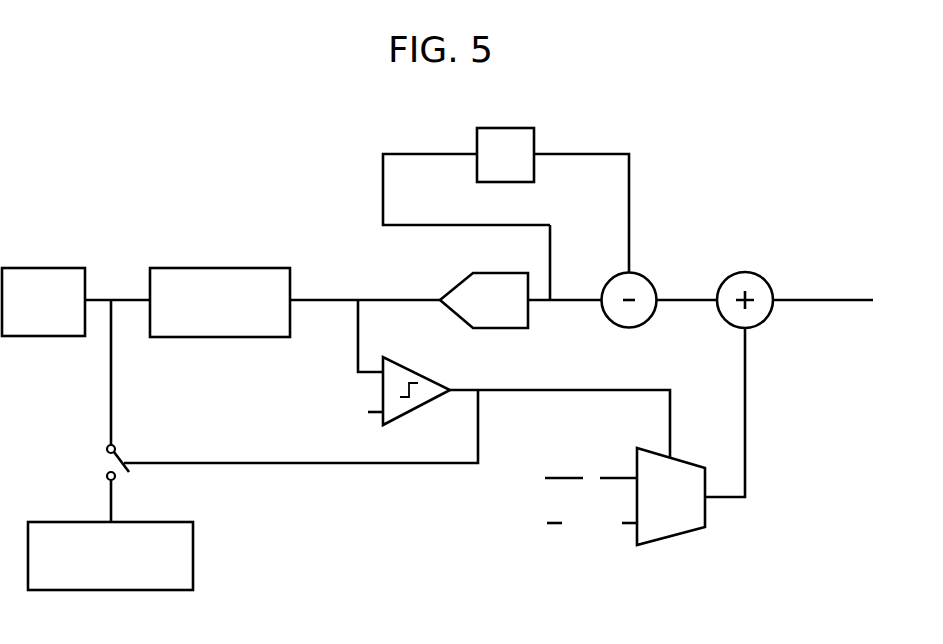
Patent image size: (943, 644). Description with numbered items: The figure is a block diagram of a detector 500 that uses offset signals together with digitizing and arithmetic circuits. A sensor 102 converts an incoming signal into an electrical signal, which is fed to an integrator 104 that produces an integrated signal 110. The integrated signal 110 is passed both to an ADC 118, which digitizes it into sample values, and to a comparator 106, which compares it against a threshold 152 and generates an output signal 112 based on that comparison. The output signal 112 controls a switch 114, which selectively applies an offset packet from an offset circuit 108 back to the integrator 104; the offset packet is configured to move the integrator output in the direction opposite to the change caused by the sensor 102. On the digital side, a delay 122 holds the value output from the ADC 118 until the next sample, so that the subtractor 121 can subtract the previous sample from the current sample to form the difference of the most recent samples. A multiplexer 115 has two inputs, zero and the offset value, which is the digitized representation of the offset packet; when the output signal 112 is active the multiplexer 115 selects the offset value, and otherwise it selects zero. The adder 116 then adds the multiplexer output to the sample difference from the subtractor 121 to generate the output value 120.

The detector 500 is at (116, 120).
The sensor 102 is at (43, 302).
The integrator 104 is at (220, 302).
The integrated signal 110 is at (360, 297).
The ADC 118 is at (536, 328).
The delay 122 is at (477, 140).
The subtractor 121 is at (652, 280).
The adder 116 is at (766, 321).
The output value 120 is at (806, 300).
The comparator 106 is at (426, 376).
The threshold 152 is at (328, 412).
The output signal 112 is at (398, 465).
The switch 114 is at (106, 451).
The offset circuit 108 is at (110, 556).
The multiplexer 115 is at (668, 540).